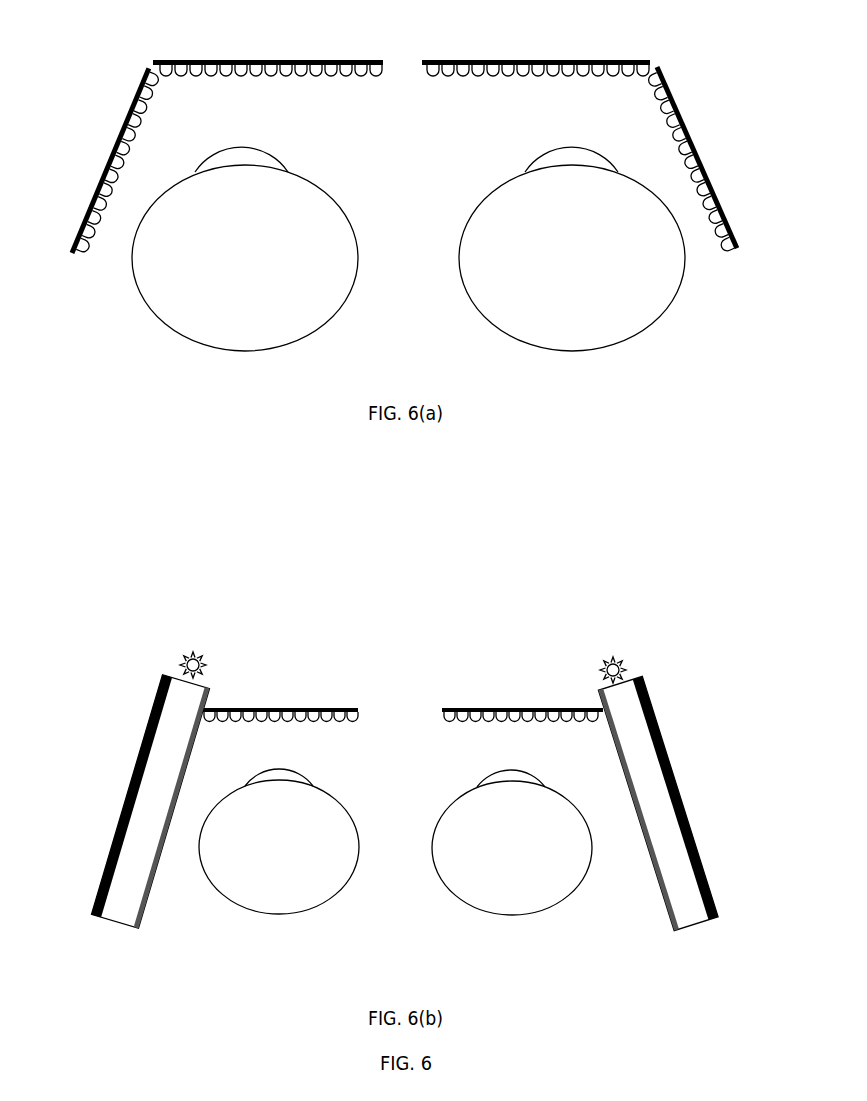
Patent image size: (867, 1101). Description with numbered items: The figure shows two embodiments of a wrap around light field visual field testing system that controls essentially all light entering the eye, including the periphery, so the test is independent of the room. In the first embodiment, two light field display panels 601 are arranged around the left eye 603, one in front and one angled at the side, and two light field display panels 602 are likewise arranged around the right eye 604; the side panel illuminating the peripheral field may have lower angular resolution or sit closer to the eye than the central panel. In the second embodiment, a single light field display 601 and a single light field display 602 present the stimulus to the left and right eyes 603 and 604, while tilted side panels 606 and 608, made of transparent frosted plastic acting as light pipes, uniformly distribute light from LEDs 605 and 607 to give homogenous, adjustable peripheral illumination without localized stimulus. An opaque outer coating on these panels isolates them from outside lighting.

In FIG. 6A, the light field display panels 601 is at (223, 52).
In FIG. 6B, the light field display panels 601 is at (283, 700).
In FIG. 6A, the light field display panels 602 is at (573, 52).
In FIG. 6B, the light field display panels 602 is at (535, 700).
In FIG. 6A, the left eye 603 is at (130, 298).
In FIG. 6B, the left eye 603 is at (243, 910).
In FIG. 6A, the right eye 604 is at (658, 325).
In FIG. 6B, the right eye 604 is at (565, 907).
In FIG. 6B, the LED 605 is at (175, 662).
In FIG. 6B, the side panel 606 is at (122, 783).
In FIG. 6B, the LED 607 is at (630, 665).
In FIG. 6B, the side panel 608 is at (700, 823).